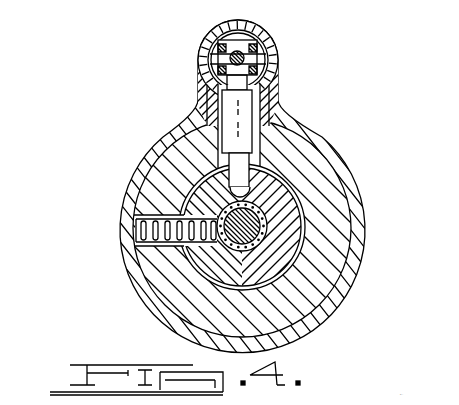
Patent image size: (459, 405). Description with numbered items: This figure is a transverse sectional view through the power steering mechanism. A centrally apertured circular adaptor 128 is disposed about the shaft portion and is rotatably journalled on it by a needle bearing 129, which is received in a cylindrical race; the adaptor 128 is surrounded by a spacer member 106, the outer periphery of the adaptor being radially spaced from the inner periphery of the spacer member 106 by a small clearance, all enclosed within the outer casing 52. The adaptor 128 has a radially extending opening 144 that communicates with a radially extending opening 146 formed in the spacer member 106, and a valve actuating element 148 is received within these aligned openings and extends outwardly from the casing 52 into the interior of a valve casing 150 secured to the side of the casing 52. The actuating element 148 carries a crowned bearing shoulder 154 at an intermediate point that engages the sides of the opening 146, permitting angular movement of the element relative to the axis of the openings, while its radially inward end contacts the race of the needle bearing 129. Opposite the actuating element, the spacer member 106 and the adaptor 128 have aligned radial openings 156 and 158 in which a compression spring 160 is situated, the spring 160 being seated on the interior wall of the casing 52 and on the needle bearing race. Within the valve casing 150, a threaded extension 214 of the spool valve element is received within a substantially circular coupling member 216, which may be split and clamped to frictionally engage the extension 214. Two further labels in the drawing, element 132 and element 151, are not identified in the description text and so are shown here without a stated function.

The casing 52 is at (323, 139).
The spacer member 106 is at (325, 173).
The circular adaptor 128 is at (258, 213).
The needle bearing 129 is at (247, 256).
The bore wall 132 is at (182, 190).
The radially extending opening 144 is at (262, 167).
The radially extending opening 146 is at (254, 132).
The valve actuating element 148 is at (262, 97).
The valve casing 150 is at (212, 30).
The bore 151 is at (302, 224).
The bearing shoulder 154 is at (220, 152).
The radial opening 156 is at (142, 253).
The radial opening 158 is at (222, 247).
The compression spring 160 is at (136, 231).
The threaded extension 214 is at (220, 57).
The coupling member 216 is at (268, 60).